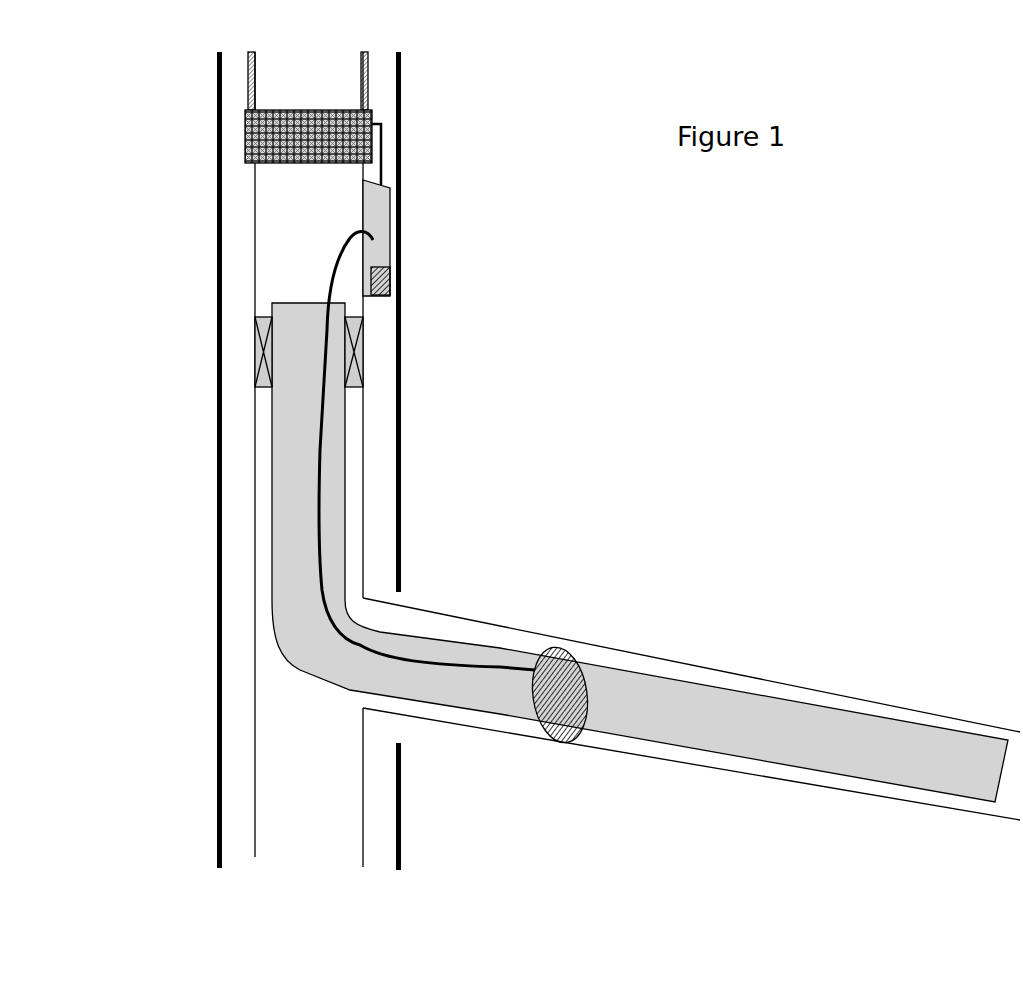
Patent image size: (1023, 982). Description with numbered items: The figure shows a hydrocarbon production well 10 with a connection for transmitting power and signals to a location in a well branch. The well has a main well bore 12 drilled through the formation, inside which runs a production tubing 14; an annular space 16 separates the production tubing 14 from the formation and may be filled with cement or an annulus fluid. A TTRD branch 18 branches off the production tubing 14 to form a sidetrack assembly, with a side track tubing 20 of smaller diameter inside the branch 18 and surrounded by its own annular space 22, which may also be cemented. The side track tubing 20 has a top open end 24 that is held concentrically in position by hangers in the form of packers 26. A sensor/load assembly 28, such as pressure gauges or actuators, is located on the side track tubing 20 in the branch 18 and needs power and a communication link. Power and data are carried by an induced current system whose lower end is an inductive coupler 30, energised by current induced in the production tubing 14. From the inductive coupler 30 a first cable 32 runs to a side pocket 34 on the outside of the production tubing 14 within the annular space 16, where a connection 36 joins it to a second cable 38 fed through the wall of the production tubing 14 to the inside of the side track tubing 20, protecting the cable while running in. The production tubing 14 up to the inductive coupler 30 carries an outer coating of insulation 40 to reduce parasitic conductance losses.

The hydrocarbon production well 10 is at (632, 357).
The main well bore 12 is at (222, 747).
The production tubing 14 is at (255, 267).
The annular space 16 is at (230, 410).
The TTRD branch 18 is at (837, 690).
The side track tubing 20 is at (770, 762).
The annular space 22 is at (662, 752).
The top open end 24 is at (290, 302).
The packers 26 is at (363, 345).
The sensor/load assembly 28 is at (552, 743).
The inductive coupler 30 is at (245, 132).
The first cable 32 is at (383, 163).
The side pocket 34 is at (390, 250).
The connection 36 is at (390, 287).
The second cable 38 is at (317, 483).
The insulation 40 is at (248, 65).